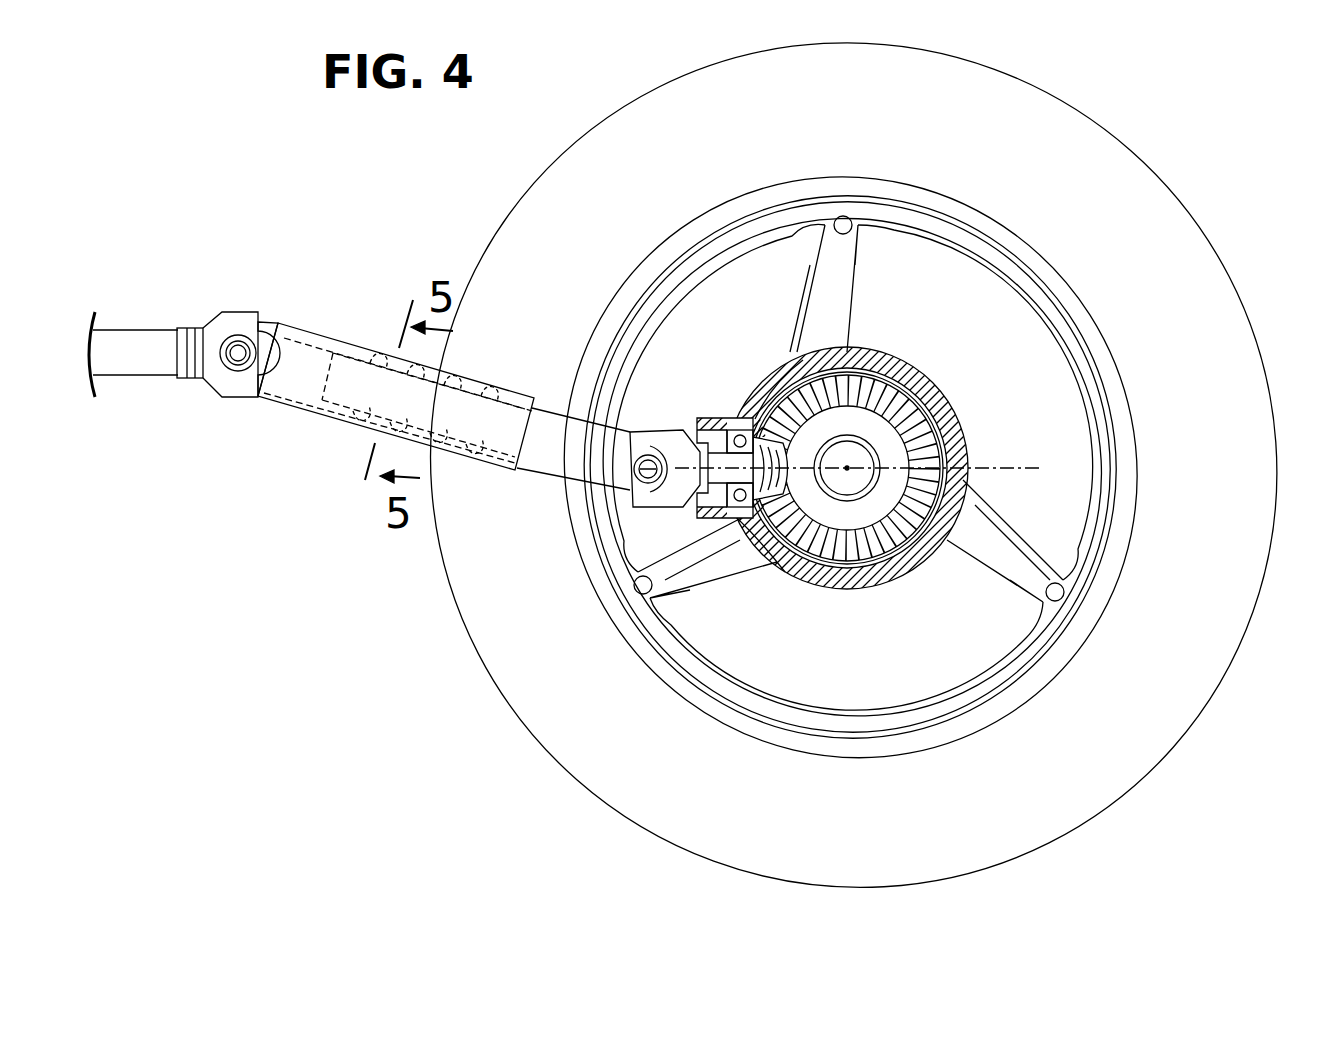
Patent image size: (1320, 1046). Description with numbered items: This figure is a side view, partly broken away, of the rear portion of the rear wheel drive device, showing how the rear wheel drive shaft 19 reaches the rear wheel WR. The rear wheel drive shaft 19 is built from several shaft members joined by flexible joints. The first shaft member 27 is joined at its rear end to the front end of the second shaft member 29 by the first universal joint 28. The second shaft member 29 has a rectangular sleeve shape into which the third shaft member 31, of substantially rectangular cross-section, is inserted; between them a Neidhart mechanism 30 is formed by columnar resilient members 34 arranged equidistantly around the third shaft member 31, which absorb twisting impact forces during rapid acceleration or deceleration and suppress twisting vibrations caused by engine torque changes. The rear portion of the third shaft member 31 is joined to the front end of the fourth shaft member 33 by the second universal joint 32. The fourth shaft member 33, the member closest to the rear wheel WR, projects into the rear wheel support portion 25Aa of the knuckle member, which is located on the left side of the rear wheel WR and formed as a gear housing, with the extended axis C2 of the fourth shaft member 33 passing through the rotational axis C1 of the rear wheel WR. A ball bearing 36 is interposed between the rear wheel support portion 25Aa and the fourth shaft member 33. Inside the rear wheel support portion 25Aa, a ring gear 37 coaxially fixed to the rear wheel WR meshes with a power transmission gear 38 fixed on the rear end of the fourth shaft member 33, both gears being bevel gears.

The rear wheel drive shaft 19 is at (163, 318).
The first shaft member 27 is at (126, 360).
The first universal joint 28 is at (243, 302).
The second shaft member 29 is at (296, 322).
The Neidhart mechanism 30 is at (464, 364).
The third shaft member 31 is at (556, 450).
The second universal joint 32 is at (654, 422).
The fourth shaft member 33 is at (710, 515).
The columnar resilient members 34 is at (510, 381).
The ball bearing 36 is at (738, 434).
The ring gear 37 is at (893, 405).
The power transmission gear 38 is at (788, 577).
The rear wheel support portion 25Aa is at (943, 403).
The rotational axis C1 is at (847, 468).
The axis C2 is at (990, 467).
The rear wheel WR is at (497, 646).